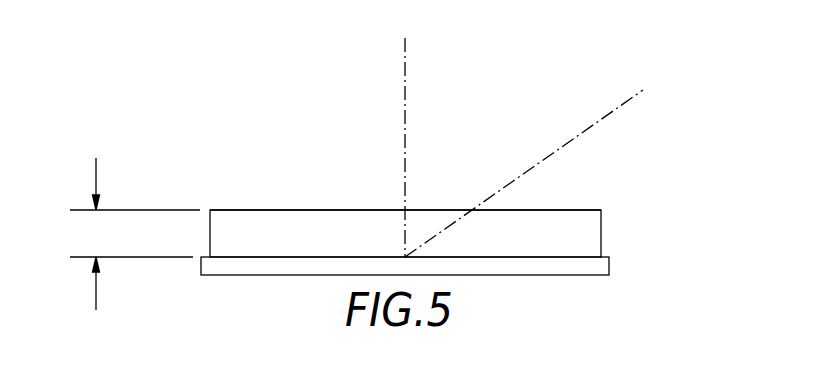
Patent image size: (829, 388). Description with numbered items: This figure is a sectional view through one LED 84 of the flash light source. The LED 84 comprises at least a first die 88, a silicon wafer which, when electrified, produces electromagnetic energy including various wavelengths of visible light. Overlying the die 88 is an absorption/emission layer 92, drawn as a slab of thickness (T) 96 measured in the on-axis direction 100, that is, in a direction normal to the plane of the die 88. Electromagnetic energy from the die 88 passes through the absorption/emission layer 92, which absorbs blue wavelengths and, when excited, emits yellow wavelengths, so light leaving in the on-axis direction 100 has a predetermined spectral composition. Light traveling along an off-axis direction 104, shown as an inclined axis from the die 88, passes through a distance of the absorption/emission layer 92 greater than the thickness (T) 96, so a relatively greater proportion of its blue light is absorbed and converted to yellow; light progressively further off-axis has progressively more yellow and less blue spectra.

The LED 84 is at (601, 237).
The first die 88 is at (609, 263).
The absorption/emission layer 92 is at (601, 213).
The thickness (T) 96 is at (96, 158).
The on-axis direction 100 is at (405, 78).
The off-axis direction 104 is at (608, 115).